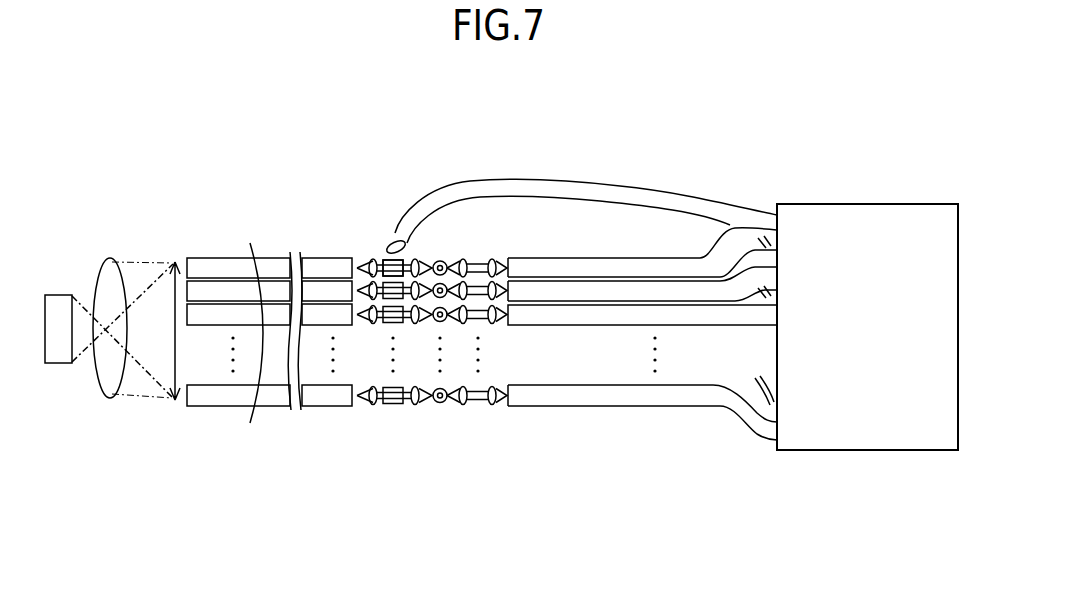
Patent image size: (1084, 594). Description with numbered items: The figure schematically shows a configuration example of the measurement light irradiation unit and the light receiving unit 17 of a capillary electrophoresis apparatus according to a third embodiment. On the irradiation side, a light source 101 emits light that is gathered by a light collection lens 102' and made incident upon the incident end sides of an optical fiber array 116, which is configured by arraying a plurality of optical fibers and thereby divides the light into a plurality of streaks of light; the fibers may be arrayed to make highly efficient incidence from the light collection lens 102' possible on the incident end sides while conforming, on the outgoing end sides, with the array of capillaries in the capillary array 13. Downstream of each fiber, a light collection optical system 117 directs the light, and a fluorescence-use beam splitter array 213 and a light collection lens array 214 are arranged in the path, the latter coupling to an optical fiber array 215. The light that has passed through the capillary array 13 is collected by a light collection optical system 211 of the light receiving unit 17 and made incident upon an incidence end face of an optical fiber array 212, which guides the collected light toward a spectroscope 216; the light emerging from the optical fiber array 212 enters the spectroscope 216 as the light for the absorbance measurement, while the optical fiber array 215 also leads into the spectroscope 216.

The light source 101 is at (57, 295).
The light collection lens 102' is at (126, 299).
The optical fiber array 116 is at (256, 422).
The light collection optical system 117 is at (423, 412).
The fluorescence-use beam splitter array 213 is at (386, 260).
The capillary array 13 is at (440, 403).
The light collection optical system 211 is at (497, 412).
The optical fiber array 212 is at (652, 406).
The light receiving unit 17 is at (690, 463).
The optical fiber array 215 is at (618, 182).
The light collection lens array 214 is at (390, 246).
The spectroscope 216 is at (805, 204).